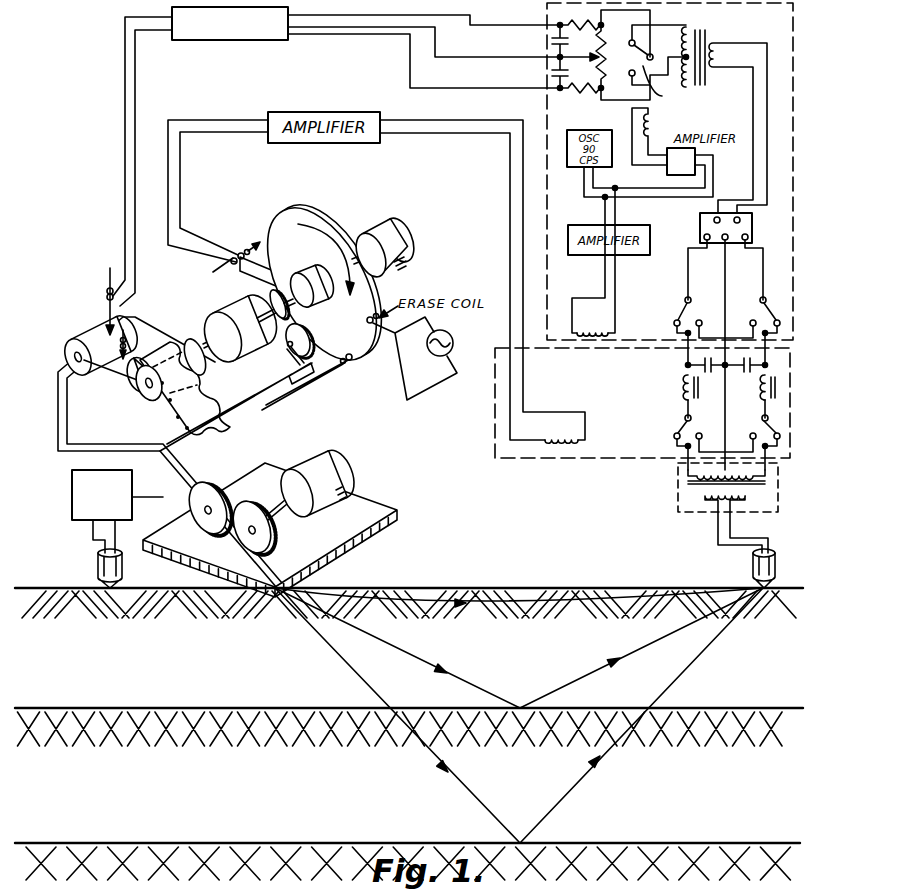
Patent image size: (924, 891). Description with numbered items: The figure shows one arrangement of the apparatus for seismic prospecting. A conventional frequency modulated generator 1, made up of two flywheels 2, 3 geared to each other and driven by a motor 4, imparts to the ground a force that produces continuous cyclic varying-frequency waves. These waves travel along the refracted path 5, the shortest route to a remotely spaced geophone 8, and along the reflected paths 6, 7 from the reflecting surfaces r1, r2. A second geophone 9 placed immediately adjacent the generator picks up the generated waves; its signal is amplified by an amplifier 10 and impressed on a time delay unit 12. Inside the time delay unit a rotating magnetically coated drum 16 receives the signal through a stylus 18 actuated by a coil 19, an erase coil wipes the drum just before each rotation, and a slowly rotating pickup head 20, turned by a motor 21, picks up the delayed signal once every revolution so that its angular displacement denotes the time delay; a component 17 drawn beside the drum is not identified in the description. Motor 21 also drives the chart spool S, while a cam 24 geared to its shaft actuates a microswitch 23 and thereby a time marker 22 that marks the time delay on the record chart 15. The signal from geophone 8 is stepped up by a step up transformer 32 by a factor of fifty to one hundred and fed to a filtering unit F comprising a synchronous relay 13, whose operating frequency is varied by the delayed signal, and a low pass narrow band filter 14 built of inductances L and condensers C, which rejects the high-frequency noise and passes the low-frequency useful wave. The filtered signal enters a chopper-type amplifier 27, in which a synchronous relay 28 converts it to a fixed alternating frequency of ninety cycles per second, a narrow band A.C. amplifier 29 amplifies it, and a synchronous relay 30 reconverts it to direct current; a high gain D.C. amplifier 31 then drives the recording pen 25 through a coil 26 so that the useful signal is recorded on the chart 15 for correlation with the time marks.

The frequency modulated generator 1 is at (393, 550).
The flywheel 2 is at (206, 489).
The flywheel 3 is at (258, 506).
The motor 4 is at (351, 464).
The refracted wave path 5 is at (362, 600).
The reflected wave path 6 is at (389, 644).
The reflected wave path 7 is at (374, 689).
The geophone 8 is at (752, 565).
The geophone 9 is at (97, 567).
The amplifier 10 is at (72, 499).
The time delay unit 12 is at (452, 282).
The synchronous relay 13 is at (680, 428).
The low pass narrow band filter 14 is at (686, 366).
The record chart 15 is at (141, 329).
The magnetically coated drum 16 is at (304, 217).
The drum 17 is at (397, 228).
The stylus 18 is at (353, 359).
The coil 19 is at (346, 366).
The pickup head 20 is at (252, 252).
The motor 21 is at (268, 350).
The time marker 22 is at (126, 361).
The microswitch 23 is at (302, 386).
The cam 24 is at (287, 345).
The recording pen 25 is at (117, 317).
The coil 26 is at (105, 295).
The chopper-type amplifier 27 is at (549, 113).
The synchronous relay 28 is at (681, 314).
The narrow band A.C. amplifier 29 is at (699, 229).
The synchronous relay 30 is at (653, 94).
The high gain D.C. amplifier 31 is at (218, 42).
The step up transformer 32 is at (678, 496).
The chart spool S is at (147, 402).
The condensers C is at (721, 379).
The inductances L is at (710, 405).
The filtering unit F is at (590, 460).
The reflecting surface r1 is at (626, 708).
The reflecting surface r2 is at (612, 831).